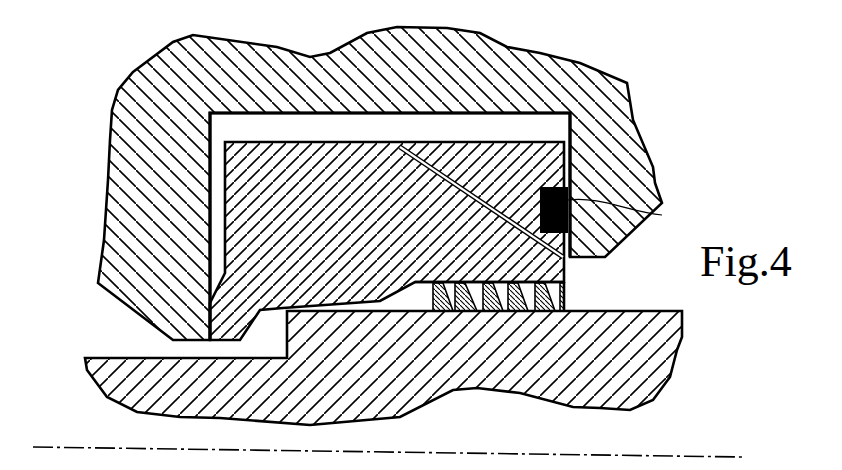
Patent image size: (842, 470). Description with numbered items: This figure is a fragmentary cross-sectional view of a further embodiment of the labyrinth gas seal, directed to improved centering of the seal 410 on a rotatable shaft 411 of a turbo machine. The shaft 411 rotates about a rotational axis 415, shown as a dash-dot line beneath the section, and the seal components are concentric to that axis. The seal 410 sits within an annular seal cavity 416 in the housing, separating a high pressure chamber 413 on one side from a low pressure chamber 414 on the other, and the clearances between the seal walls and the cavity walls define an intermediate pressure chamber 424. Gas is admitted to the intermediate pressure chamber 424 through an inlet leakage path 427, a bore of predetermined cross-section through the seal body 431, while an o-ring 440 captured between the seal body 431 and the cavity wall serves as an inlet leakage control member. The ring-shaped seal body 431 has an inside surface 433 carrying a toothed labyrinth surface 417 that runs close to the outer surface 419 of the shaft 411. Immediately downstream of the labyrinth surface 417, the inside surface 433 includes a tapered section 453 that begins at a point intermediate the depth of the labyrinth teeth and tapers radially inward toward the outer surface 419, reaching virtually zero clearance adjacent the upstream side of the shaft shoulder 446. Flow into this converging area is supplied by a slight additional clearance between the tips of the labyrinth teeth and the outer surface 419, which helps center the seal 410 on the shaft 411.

The seal 410 is at (157, 162).
The rotatable shaft 411 is at (650, 362).
The high pressure chamber 413 is at (588, 294).
The low pressure chamber 414 is at (78, 337).
The rotational axis 415 is at (710, 457).
The seal cavity 416 is at (545, 130).
The labyrinth surface 417 is at (441, 316).
The outer surface of the shaft 419 is at (634, 312).
The intermediate pressure chamber 424 is at (297, 137).
The inlet leakage path 427 is at (452, 147).
The seal body 431 is at (337, 224).
The inside surface 433 is at (473, 316).
The o-ring 440 is at (662, 215).
The shaft shoulder 446 is at (283, 334).
The tapered section 453 is at (379, 310).